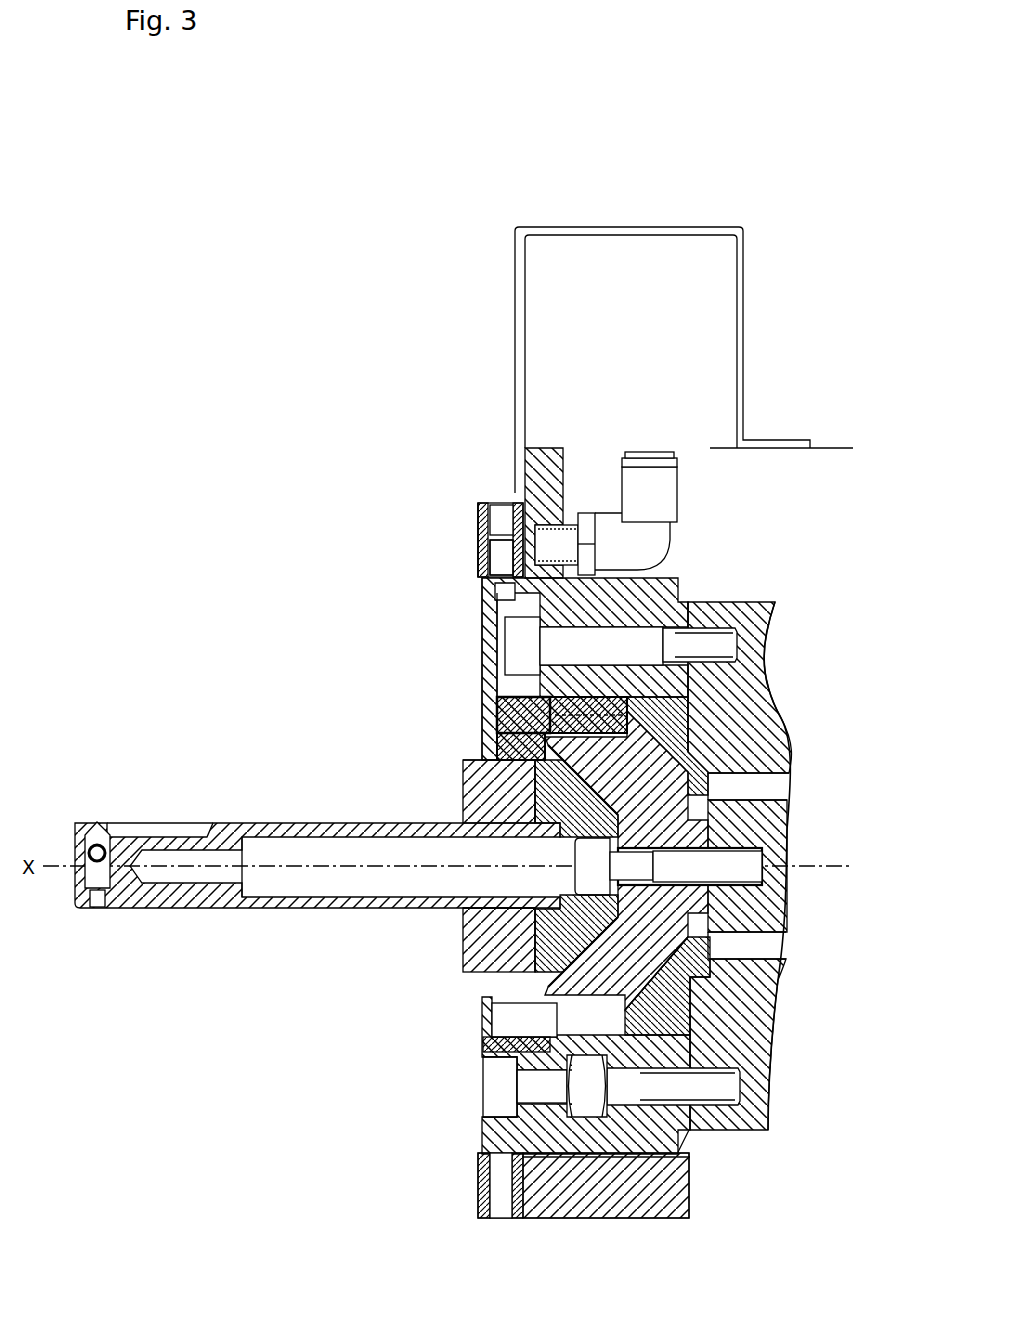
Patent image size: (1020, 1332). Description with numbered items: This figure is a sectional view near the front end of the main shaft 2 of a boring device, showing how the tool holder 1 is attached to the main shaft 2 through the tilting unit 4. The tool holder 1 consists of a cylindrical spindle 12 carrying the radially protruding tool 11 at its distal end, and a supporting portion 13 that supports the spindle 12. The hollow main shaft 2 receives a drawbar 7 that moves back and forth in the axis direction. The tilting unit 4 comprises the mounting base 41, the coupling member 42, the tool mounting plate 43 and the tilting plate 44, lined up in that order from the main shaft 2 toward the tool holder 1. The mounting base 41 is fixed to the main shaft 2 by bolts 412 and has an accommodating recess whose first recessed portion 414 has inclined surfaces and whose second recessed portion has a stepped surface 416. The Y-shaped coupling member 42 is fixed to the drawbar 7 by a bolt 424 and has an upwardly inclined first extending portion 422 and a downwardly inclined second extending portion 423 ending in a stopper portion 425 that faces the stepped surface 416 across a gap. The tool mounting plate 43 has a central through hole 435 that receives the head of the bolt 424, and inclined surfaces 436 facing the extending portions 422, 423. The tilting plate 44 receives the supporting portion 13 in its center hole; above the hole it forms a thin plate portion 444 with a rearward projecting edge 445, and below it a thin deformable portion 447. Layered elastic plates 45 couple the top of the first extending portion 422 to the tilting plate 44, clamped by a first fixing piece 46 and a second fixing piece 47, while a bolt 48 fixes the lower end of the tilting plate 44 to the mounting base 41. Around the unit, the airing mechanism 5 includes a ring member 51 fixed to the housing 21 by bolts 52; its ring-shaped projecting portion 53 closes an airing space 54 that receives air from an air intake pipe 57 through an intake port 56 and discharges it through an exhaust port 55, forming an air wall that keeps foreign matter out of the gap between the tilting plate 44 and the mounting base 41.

The tool holder 1 is at (210, 951).
The main shaft 2 is at (752, 1127).
The tilting unit 4 is at (358, 489).
The airing mechanism 5 is at (464, 468).
The drawbar 7 is at (773, 886).
The tool 11 is at (92, 822).
The spindle 12 is at (242, 822).
The supporting portion 13 is at (465, 910).
The housing 21 is at (835, 455).
The mounting base 41 is at (696, 1157).
The coupling member 42 is at (698, 803).
The tool mounting plate 43 is at (520, 787).
The tilting plate 44 is at (474, 665).
The elastic plates 45 is at (505, 735).
The first fixing piece 46 is at (497, 710).
The second fixing piece 47 is at (605, 712).
The bolt 48 is at (490, 1090).
The ring member 51 is at (478, 518).
The bolts 52 is at (544, 513).
The projecting portion 53 is at (503, 518).
The airing space 54 is at (493, 552).
The exhaust port 55 is at (510, 1195).
The intake port 56 is at (540, 548).
The air intake pipe 57 is at (667, 500).
The bolts 412 is at (633, 636).
The first recessed portion 414 is at (690, 925).
The stepped surface 416 is at (592, 1062).
The first extending portion 422 is at (645, 754).
The second extending portion 423 is at (705, 940).
The bolt 424 is at (735, 860).
The stopper portion 425 is at (655, 1038).
The through hole 435 is at (565, 827).
The inclined surfaces 436 is at (492, 1000).
The thin plate portion 444 is at (480, 627).
The projecting edge 445 is at (490, 597).
The thin portion 447 is at (490, 1045).